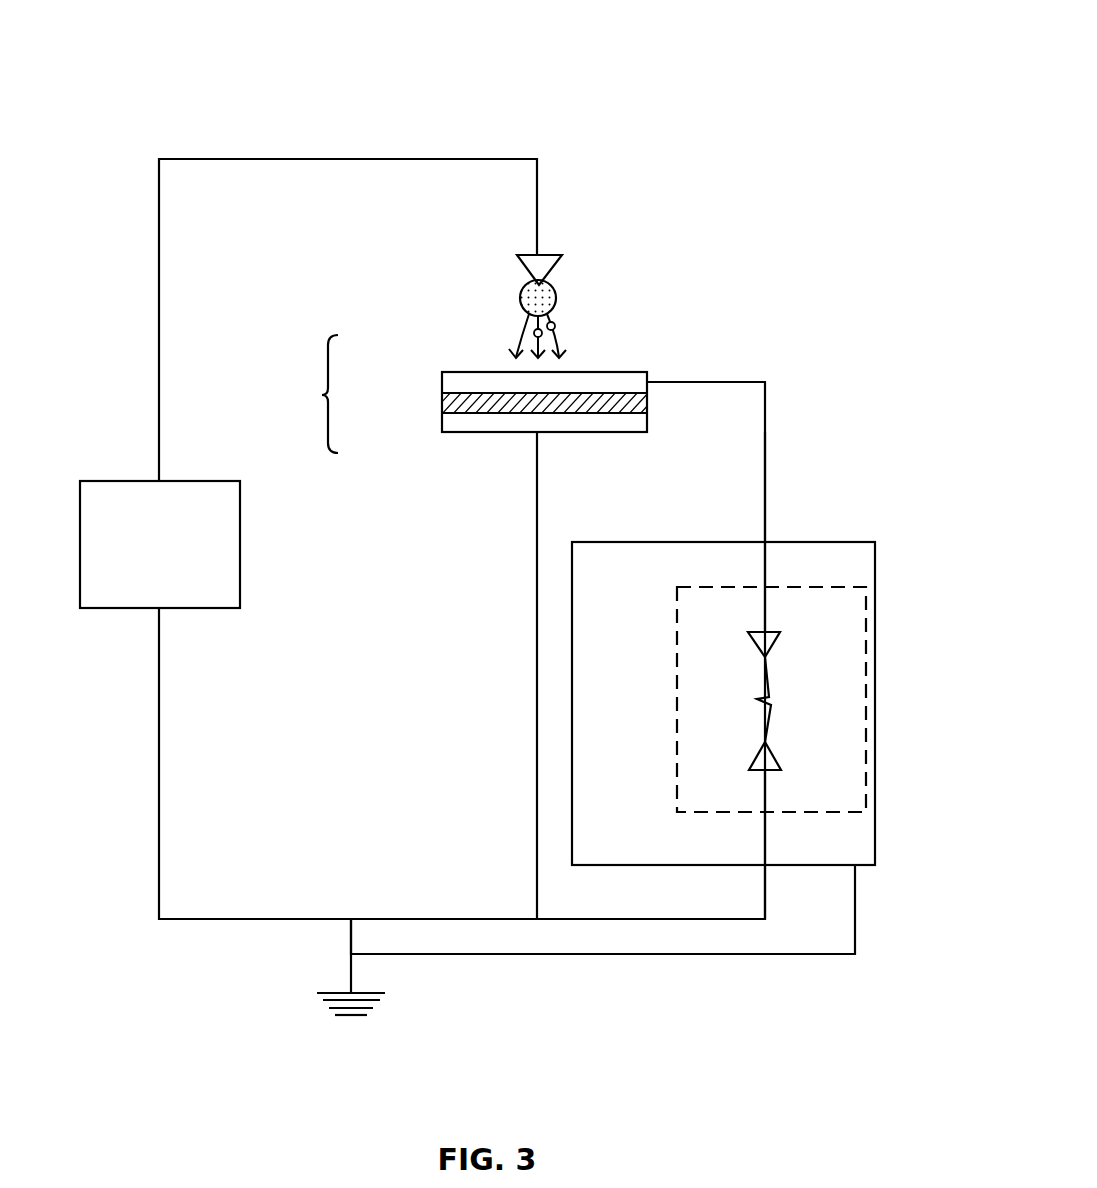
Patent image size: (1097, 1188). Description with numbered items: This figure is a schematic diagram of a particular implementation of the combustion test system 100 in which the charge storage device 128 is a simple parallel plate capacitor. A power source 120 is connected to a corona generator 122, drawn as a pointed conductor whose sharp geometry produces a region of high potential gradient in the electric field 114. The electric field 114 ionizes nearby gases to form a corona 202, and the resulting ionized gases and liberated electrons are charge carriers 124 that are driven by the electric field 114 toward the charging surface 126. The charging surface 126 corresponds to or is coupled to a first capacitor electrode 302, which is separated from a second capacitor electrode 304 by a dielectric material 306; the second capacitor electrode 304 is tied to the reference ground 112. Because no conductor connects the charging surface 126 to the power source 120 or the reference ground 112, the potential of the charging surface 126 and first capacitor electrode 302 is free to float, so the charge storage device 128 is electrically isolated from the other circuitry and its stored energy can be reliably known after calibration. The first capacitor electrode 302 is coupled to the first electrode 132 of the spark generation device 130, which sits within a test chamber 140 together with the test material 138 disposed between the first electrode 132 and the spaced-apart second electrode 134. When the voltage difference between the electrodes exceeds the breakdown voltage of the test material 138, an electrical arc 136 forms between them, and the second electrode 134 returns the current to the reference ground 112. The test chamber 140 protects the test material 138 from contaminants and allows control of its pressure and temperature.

The combustion test system 100 is at (678, 62).
The reference ground 112 is at (336, 1010).
The electric field 114 is at (522, 340).
The power source 120 is at (120, 481).
The corona generator 122 is at (545, 258).
The charge carriers 124 is at (562, 330).
The charging surface 126 is at (478, 372).
The charge storage device 128 is at (322, 395).
The spark generation device 130 is at (677, 650).
The first electrode 132 is at (773, 632).
The second electrode 134 is at (781, 770).
The electrical arc 136 is at (760, 700).
The test material 138 is at (630, 855).
The test chamber 140 is at (635, 542).
The corona 202 is at (522, 290).
The first capacitor electrode 302 is at (442, 386).
The second capacitor electrode 304 is at (460, 432).
The dielectric material 306 is at (452, 403).